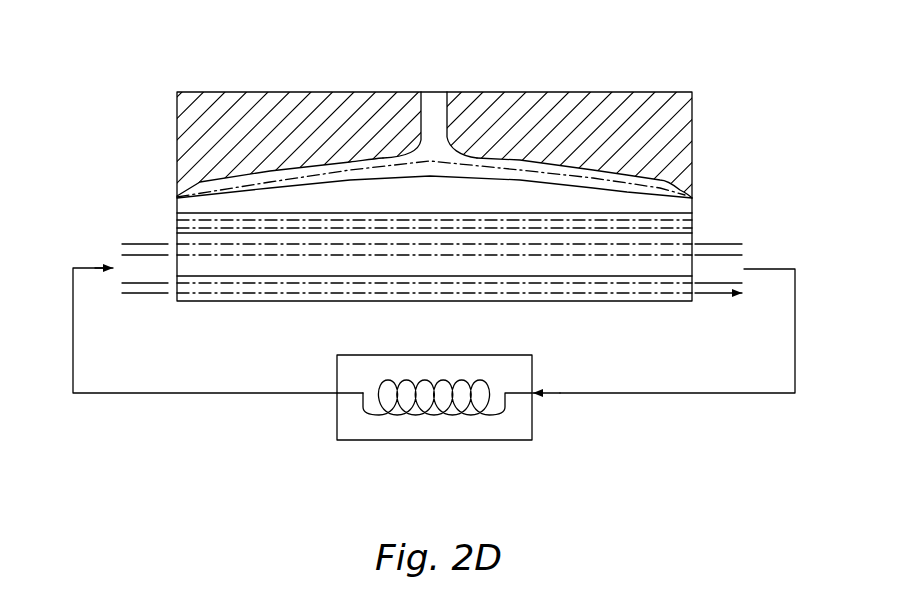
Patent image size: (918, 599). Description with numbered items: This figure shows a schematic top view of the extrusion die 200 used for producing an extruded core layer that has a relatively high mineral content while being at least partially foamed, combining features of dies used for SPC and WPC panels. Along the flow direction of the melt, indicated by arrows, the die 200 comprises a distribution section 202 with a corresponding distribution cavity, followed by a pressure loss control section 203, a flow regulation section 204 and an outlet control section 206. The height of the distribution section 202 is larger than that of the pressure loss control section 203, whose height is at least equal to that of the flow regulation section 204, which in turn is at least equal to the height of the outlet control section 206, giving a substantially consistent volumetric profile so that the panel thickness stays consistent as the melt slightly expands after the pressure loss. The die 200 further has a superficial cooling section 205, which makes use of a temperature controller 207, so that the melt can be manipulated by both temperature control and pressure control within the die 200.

The die 200 is at (153, 70).
The distribution section 202 is at (433, 118).
The pressure loss control section 203 is at (580, 203).
The flow regulation section 204 is at (692, 225).
The superficial cooling section 205 is at (210, 263).
The outlet control section 206 is at (645, 301).
The temperature controller 207 is at (433, 440).